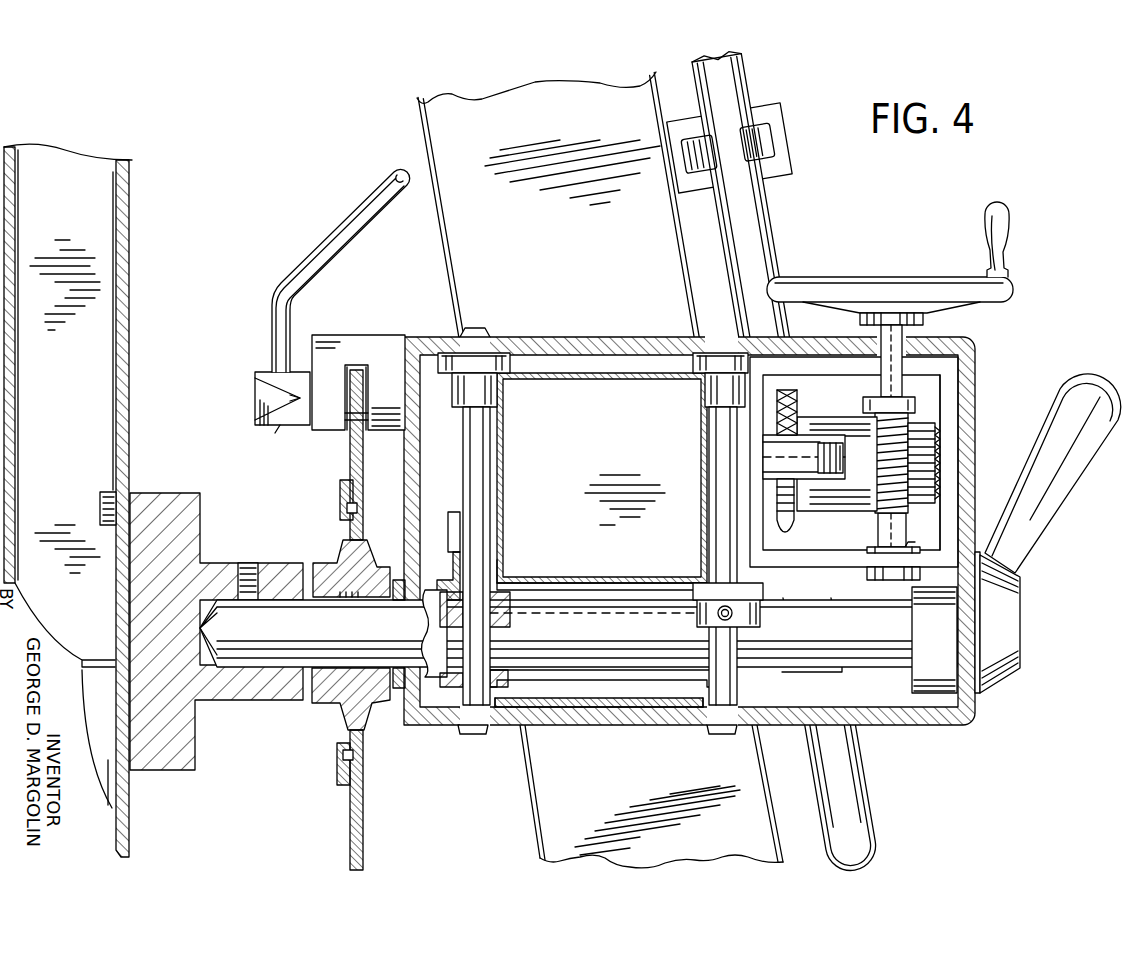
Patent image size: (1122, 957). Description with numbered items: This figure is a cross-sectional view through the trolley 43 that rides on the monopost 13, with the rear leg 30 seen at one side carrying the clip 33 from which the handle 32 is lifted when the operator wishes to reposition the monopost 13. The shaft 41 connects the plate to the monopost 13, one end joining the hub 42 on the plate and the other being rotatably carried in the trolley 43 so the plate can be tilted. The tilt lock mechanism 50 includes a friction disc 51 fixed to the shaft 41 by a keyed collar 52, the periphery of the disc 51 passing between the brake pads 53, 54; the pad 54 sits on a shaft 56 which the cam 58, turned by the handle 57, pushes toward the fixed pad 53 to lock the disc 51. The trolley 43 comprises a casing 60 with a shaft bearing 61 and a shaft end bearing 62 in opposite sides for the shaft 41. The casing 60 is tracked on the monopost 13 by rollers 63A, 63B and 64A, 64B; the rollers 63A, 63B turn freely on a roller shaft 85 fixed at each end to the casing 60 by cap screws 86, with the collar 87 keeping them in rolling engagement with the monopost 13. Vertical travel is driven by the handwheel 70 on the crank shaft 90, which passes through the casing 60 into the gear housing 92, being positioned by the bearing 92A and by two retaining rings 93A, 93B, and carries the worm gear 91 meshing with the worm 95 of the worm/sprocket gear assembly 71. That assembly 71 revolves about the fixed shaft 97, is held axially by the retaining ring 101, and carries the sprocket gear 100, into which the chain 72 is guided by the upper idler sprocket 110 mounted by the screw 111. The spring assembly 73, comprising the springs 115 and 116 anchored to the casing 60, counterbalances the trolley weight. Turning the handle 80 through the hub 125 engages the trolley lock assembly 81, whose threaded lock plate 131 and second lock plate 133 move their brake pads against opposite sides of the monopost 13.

The monopost 13 is at (536, 570).
The rear leg 30 is at (593, 271).
The handle 32 is at (750, 245).
The clip 33 is at (772, 155).
The shaft 41 is at (260, 650).
The hub 42 is at (183, 760).
The trolley 43 is at (497, 730).
The tilt lock mechanism 50 is at (340, 490).
The friction disc 51 is at (351, 452).
The keyed collar 52 is at (320, 562).
The brake pad 53 is at (367, 368).
The brake pad 54 is at (356, 368).
The shaft 56 is at (292, 400).
The handle 57 is at (300, 257).
The cam 58 is at (280, 420).
The casing 60 is at (533, 343).
The shaft bearing 61 is at (401, 690).
The shaft end bearing 62 is at (968, 750).
The roller 63A is at (483, 388).
The roller 63B is at (505, 547).
The roller 64A is at (720, 387).
The roller 64B is at (720, 572).
The handwheel 70 is at (893, 285).
The worm/sprocket gear assembly 71 is at (858, 508).
The chain 72 is at (795, 400).
The spring assembly 73 is at (606, 710).
The handle 80 is at (1060, 483).
The trolley lock assembly 81 is at (1005, 684).
The roller shaft 85 is at (476, 462).
The cap screws 86 is at (477, 327).
The collar 87 is at (508, 610).
The crank shaft 90 is at (912, 330).
The worm gear 91 is at (935, 428).
The gear housing 92 is at (845, 562).
The bearing 92A is at (940, 380).
The retaining ring 93A is at (905, 545).
The retaining ring 93B is at (893, 575).
The worm 95 is at (882, 400).
The shaft 97 is at (935, 460).
The sprocket gear 100 is at (790, 500).
The retaining ring 101 is at (885, 462).
The upper idler sprocket 110 is at (770, 457).
The screw 111 is at (850, 456).
The Negator type spring 115 is at (672, 700).
The Negator type spring 116 is at (568, 707).
The hub 125 is at (1000, 635).
The threaded lock plate 131 is at (448, 520).
The second lock plate 133 is at (712, 528).